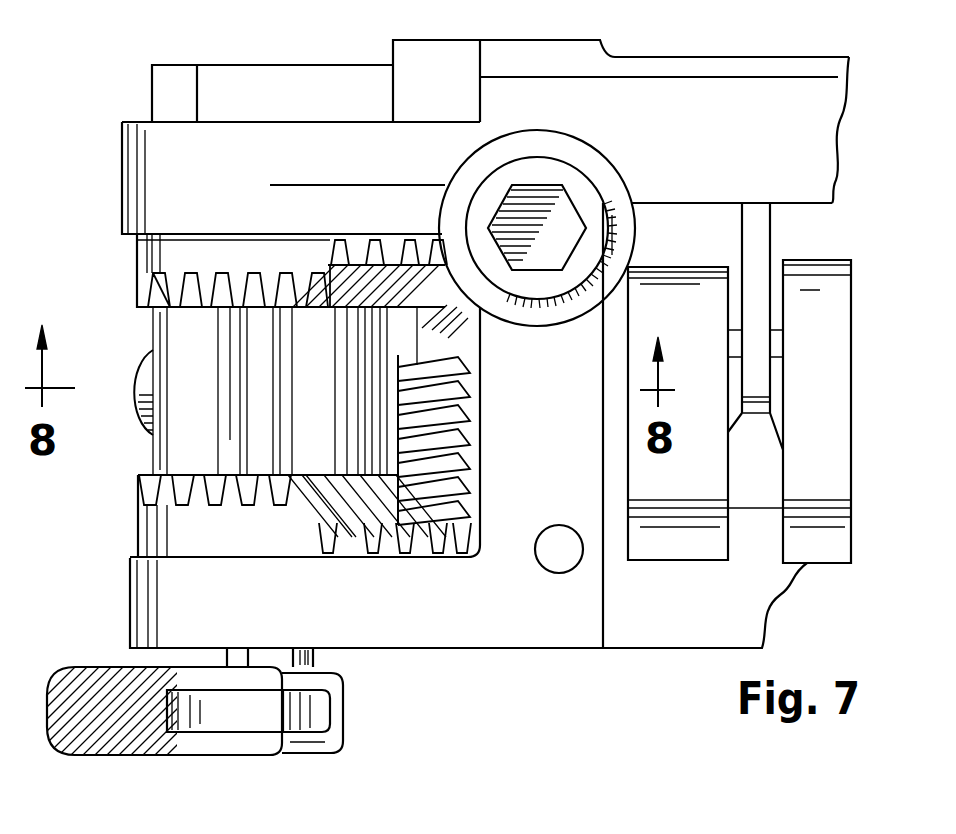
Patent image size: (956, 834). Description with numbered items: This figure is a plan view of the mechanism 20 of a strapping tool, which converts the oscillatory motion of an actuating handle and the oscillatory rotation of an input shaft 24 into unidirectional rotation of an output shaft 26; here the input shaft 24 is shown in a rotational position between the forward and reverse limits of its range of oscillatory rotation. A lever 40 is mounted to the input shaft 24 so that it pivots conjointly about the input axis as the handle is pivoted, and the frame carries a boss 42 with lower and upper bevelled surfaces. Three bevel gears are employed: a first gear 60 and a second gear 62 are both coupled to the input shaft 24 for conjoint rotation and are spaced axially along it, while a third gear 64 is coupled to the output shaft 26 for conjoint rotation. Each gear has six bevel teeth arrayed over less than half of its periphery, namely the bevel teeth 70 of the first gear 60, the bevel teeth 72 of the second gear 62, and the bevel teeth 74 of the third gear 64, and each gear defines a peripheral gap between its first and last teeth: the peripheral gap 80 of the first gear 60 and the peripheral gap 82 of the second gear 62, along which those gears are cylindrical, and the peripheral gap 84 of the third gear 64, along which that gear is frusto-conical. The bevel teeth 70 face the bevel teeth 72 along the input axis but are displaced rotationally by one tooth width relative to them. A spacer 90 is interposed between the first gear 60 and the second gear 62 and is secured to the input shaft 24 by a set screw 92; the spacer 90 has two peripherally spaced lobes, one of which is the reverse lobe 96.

The mechanism 20 is at (560, 708).
The input shaft 24 is at (318, 655).
The output shaft 26 is at (745, 337).
The lever 40 is at (232, 85).
The boss 42 is at (410, 88).
The first gear 60 is at (243, 545).
The second gear 62 is at (243, 246).
The third gear 64 is at (333, 337).
The bevel teeth 70 is at (287, 460).
The bevel teeth 72 is at (257, 323).
The bevel teeth 74 is at (407, 372).
The peripheral gap 80 is at (190, 537).
The peripheral gap 82 is at (180, 243).
The peripheral gap 84 is at (462, 335).
The spacer 90 is at (167, 452).
The set screw 92 is at (137, 400).
The reverse lobe 96 is at (437, 330).